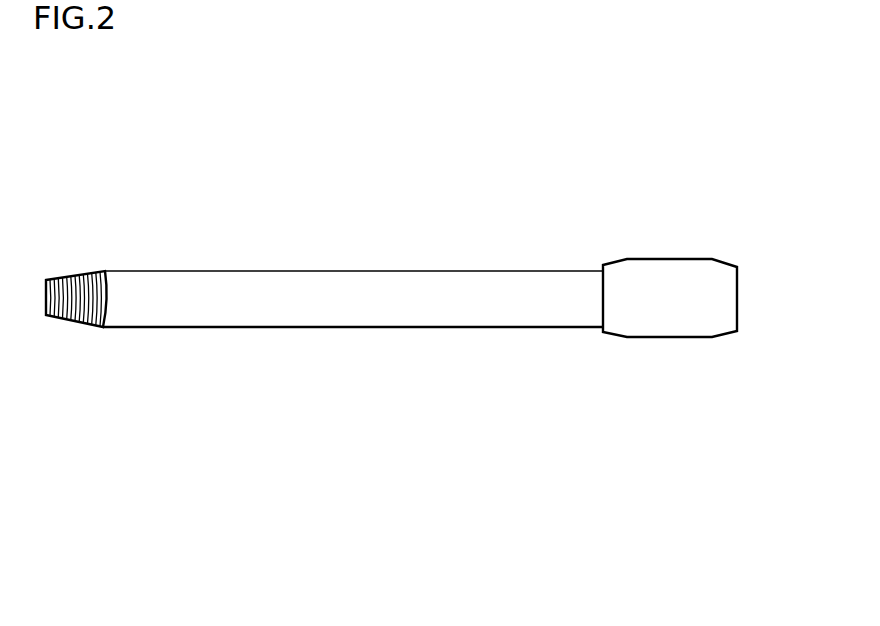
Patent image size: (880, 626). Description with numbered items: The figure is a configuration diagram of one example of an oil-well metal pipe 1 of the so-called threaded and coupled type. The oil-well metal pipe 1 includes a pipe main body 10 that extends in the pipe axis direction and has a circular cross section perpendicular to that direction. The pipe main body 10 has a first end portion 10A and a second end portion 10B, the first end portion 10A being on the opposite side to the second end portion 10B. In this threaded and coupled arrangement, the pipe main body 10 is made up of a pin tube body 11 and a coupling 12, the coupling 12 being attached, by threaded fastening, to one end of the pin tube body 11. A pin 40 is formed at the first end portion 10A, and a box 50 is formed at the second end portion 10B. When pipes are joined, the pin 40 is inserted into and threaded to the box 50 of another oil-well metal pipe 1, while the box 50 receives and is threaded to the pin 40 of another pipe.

The oil-well metal pipe 1 is at (384, 76).
The pipe main body 10 is at (387, 188).
The first end portion 10A is at (75, 264).
The second end portion 10B is at (719, 253).
The pin tube body 11 is at (347, 281).
The coupling 12 is at (668, 278).
The pin 40 is at (77, 318).
The box 50 is at (720, 318).